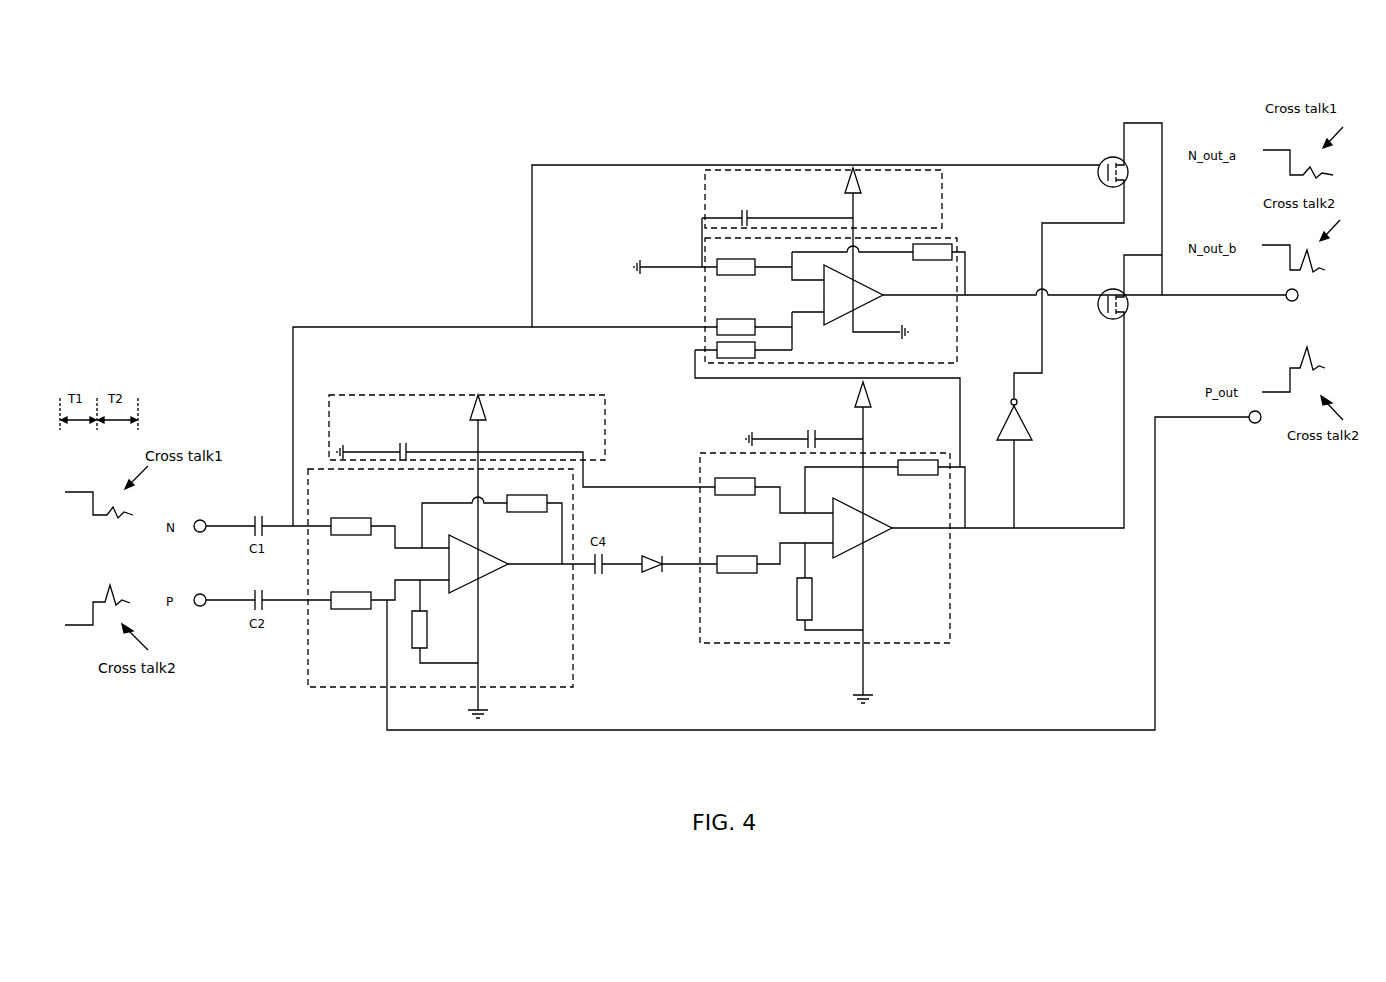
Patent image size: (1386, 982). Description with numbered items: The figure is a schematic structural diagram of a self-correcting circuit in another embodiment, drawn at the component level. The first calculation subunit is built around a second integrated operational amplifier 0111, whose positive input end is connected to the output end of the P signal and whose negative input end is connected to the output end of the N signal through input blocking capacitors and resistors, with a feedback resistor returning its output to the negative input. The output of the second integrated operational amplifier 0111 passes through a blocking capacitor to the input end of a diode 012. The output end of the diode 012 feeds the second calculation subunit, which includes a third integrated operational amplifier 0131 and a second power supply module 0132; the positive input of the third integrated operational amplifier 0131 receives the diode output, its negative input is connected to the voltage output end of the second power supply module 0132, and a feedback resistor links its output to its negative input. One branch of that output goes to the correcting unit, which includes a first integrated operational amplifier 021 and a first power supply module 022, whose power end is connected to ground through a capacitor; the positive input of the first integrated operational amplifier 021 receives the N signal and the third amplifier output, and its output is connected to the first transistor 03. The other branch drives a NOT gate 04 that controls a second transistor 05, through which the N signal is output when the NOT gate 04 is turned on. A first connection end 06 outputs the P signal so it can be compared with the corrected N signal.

The first transistor 03 is at (1104, 150).
The NOT gate 04 is at (1033, 442).
The second transistor 05 is at (1126, 312).
The P output terminal 06 is at (1254, 431).
The diode 012 is at (650, 582).
The first integrated operational amplifier 021 is at (962, 332).
The first power supply module 022 is at (943, 200).
The second integrated operational amplifier 0111 is at (315, 695).
The third integrated operational amplifier 0131 is at (972, 625).
The second power supply module 0132 is at (605, 425).